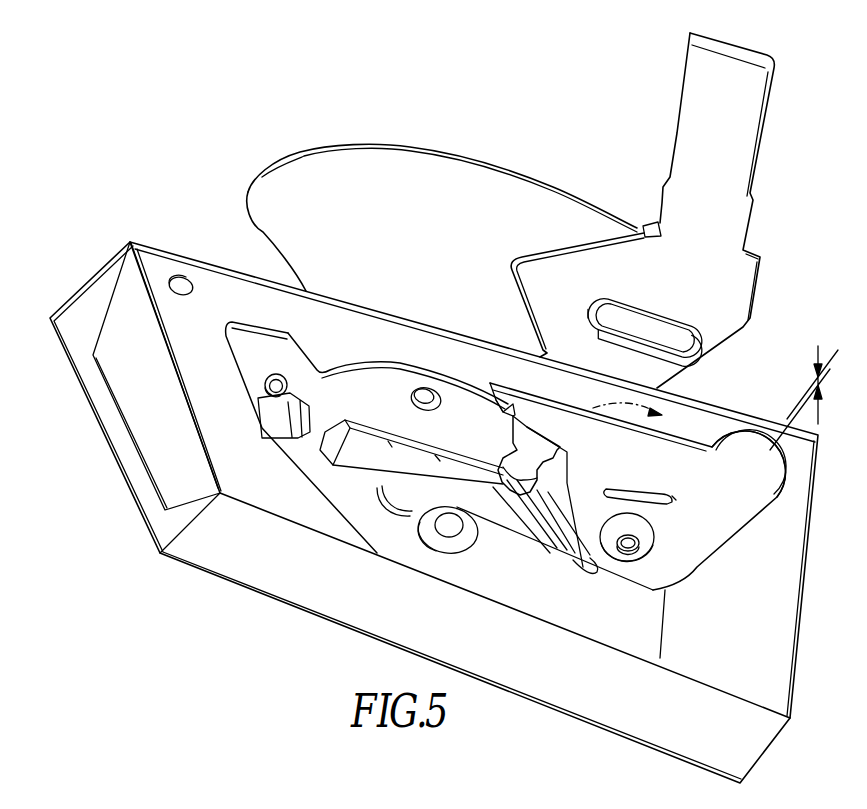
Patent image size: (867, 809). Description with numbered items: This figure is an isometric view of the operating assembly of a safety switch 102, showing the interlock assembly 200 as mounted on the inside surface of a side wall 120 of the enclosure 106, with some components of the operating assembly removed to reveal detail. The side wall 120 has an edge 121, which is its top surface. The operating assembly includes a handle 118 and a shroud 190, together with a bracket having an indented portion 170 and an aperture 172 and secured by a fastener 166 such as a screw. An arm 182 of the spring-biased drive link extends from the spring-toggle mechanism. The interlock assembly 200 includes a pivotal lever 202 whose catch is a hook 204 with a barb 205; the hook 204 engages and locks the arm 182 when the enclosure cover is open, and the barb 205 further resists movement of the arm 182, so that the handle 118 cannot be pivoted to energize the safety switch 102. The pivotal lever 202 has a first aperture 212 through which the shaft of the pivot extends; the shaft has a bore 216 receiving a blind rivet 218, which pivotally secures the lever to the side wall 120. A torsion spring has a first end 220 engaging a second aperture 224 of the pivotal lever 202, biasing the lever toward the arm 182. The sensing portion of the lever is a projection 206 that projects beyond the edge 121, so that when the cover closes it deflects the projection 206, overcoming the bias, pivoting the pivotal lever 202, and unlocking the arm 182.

The safety switch 102 is at (230, 653).
The enclosure 106 is at (235, 225).
The handle 118 is at (748, 124).
The side wall 120 is at (730, 616).
The edge 121 is at (728, 410).
The fastener 166 is at (265, 383).
The indented portion 170 is at (264, 401).
The aperture 172 is at (428, 528).
The arm 182 is at (514, 473).
The shroud 190 is at (382, 220).
The interlock assembly 200 is at (688, 402).
The pivotal lever 202 is at (585, 462).
The hook 204 is at (570, 423).
The barb 205 is at (503, 411).
The projection 206 is at (753, 472).
The first aperture 212 is at (653, 531).
The bore 216 is at (643, 548).
The blind rivet 218 is at (626, 552).
The first end 220 is at (640, 493).
The second aperture 224 is at (681, 497).